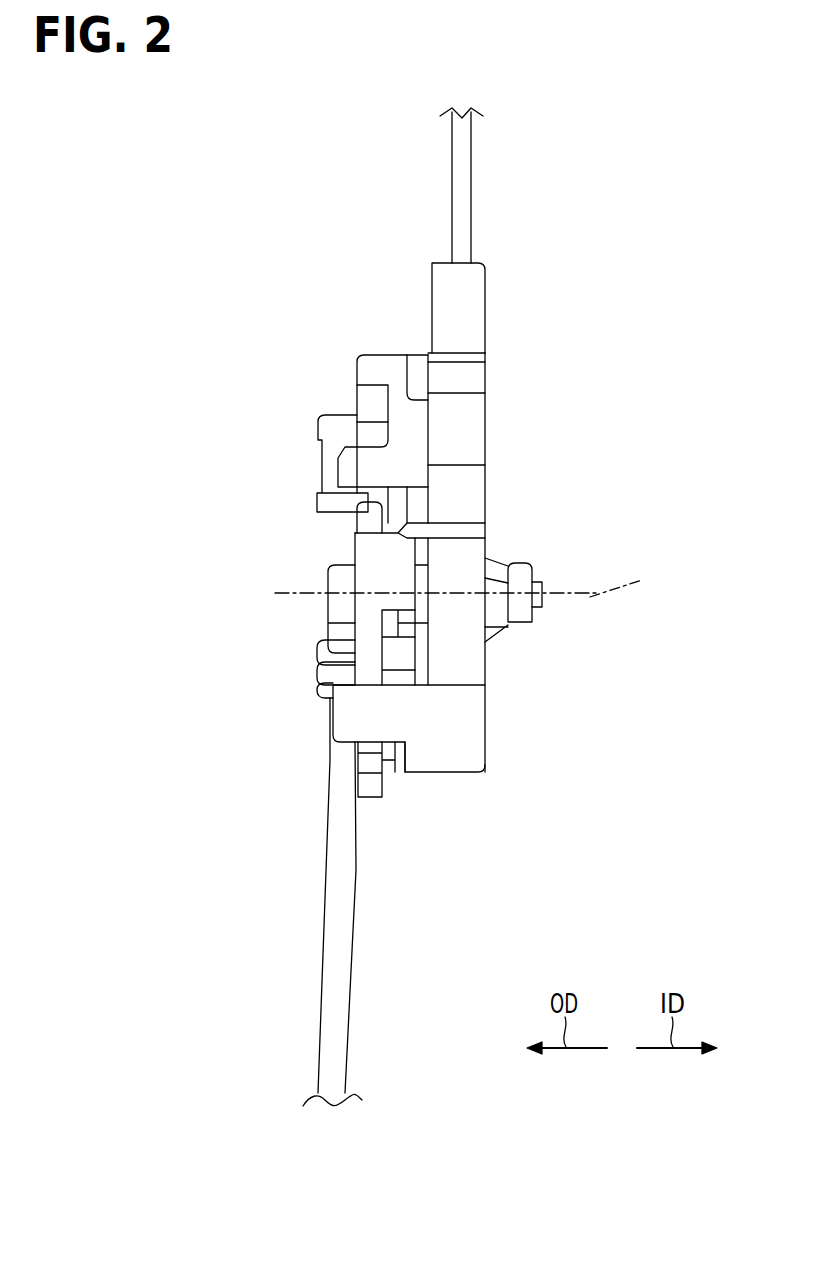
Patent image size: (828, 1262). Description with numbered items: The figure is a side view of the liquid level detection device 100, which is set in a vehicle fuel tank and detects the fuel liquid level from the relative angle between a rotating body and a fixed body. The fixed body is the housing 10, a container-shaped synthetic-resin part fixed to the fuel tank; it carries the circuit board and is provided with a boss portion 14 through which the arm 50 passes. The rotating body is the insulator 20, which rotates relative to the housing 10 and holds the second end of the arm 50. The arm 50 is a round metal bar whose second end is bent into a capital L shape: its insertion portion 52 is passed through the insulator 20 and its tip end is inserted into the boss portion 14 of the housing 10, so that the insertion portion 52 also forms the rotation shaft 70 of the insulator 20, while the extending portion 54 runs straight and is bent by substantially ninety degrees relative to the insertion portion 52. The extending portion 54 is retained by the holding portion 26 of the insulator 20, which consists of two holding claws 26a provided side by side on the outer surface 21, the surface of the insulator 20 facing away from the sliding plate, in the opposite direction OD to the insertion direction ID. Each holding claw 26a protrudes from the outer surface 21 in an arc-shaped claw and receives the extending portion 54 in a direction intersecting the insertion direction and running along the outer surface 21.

The liquid level detection device 100 is at (384, 306).
The housing 10 is at (470, 726).
The boss portion 14 is at (522, 617).
The insulator 20 is at (377, 562).
The outer surface 21 is at (353, 576).
The holding portion 26 is at (212, 622).
The holding claws 26a is at (315, 650).
The arm 50 is at (314, 912).
The insertion portion 52 is at (542, 594).
The extending portion 54 is at (330, 720).
The rotation shaft 70 is at (631, 574).